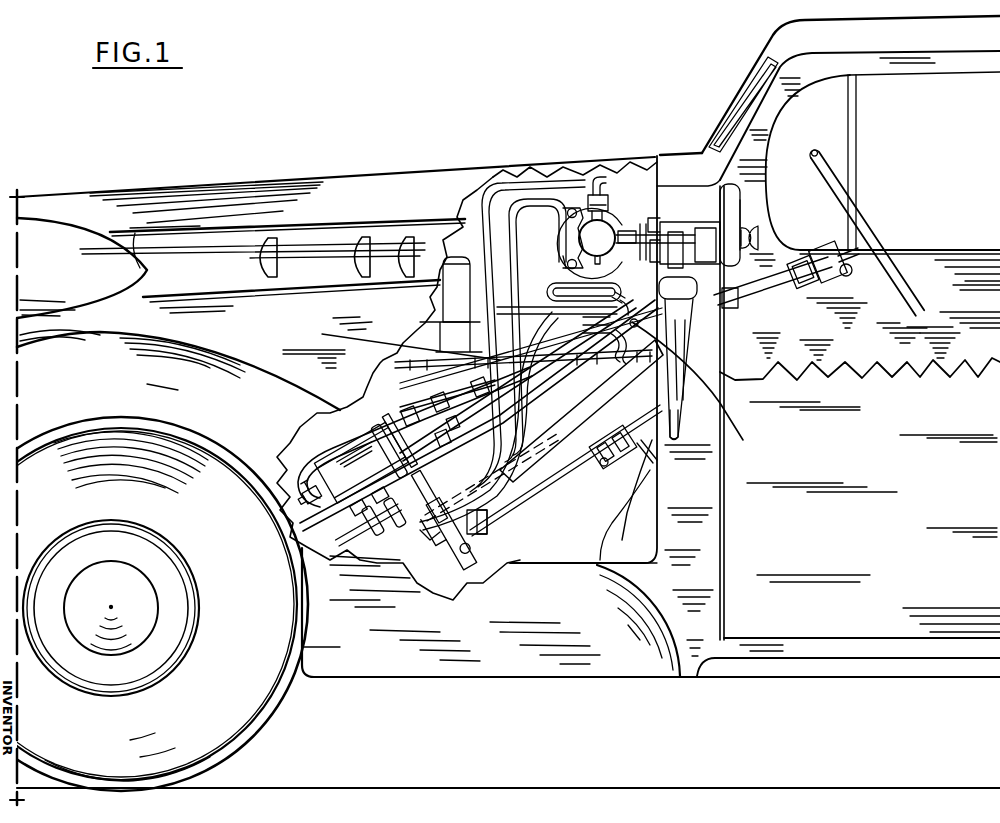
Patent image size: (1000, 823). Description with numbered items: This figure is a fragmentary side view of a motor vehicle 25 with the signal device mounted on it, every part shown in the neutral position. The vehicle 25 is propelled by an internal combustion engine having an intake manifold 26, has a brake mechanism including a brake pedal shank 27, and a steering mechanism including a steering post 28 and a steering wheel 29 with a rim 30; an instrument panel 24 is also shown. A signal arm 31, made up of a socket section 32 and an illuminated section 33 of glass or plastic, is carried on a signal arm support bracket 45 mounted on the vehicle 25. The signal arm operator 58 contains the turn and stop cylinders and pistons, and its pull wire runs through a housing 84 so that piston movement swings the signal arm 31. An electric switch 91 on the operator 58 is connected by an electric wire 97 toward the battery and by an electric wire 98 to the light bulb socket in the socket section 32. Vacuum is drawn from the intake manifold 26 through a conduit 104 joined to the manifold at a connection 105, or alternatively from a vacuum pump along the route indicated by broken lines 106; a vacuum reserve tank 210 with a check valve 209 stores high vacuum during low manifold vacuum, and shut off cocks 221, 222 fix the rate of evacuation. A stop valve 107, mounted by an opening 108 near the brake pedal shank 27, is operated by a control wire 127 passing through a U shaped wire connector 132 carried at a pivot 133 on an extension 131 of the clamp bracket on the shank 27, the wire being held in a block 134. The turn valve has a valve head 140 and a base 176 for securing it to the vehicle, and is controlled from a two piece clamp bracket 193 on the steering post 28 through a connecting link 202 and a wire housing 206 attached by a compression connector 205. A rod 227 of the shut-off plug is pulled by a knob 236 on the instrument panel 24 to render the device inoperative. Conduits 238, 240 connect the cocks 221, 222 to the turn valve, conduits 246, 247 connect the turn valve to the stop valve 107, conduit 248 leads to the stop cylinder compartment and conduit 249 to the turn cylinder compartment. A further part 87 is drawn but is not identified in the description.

The instrument panel 24 is at (728, 222).
The motor vehicle 25 is at (68, 208).
The intake manifold 26 is at (334, 337).
The brake pedal shank 27 is at (658, 466).
The steering post 28 is at (727, 323).
The steering wheel 29 is at (838, 194).
The rim 30 is at (820, 154).
The signal arm 31 is at (680, 297).
The socket section 32 is at (674, 232).
The illuminated section 33 is at (678, 404).
The signal arm support bracket 45 is at (703, 230).
The signal arm operator 58 is at (370, 479).
The housing 84 is at (513, 387).
The conduit 87 is at (307, 500).
The electric switch 91 is at (402, 417).
The electric wire 97 is at (552, 362).
The electric wire 98 is at (440, 397).
The conduit 104 is at (491, 242).
The intake manifold connection 105 is at (420, 348).
The broken-line conduit 106 is at (487, 182).
The stop valve 107 is at (489, 527).
The opening 108 is at (470, 562).
The control wire 127 is at (553, 480).
The extension 131 is at (628, 500).
The U shaped wire connector 132 is at (603, 468).
The pivot 133 is at (602, 446).
The block 134 is at (621, 470).
The valve head 140 is at (703, 387).
The base 176 is at (360, 535).
The two piece clamp bracket 193 is at (840, 250).
The connecting link 202 is at (850, 264).
The compression male connector, sleeve and nut assembly 205 is at (799, 258).
The wire housing 206 is at (766, 296).
The check valve 209 is at (598, 193).
The vacuum reserve tank 210 is at (608, 250).
The shut off cock 221 is at (573, 208).
The shut off cock 222 is at (562, 262).
The rod 227 is at (637, 222).
The knob 236 is at (760, 236).
The conduit 238 is at (531, 198).
The conduit 240 is at (553, 291).
The conduit 246 is at (550, 322).
The conduit 247 is at (616, 290).
The conduit 248 is at (449, 440).
The conduit 249 is at (333, 408).